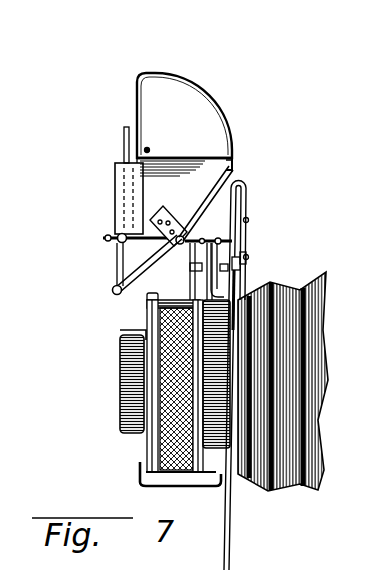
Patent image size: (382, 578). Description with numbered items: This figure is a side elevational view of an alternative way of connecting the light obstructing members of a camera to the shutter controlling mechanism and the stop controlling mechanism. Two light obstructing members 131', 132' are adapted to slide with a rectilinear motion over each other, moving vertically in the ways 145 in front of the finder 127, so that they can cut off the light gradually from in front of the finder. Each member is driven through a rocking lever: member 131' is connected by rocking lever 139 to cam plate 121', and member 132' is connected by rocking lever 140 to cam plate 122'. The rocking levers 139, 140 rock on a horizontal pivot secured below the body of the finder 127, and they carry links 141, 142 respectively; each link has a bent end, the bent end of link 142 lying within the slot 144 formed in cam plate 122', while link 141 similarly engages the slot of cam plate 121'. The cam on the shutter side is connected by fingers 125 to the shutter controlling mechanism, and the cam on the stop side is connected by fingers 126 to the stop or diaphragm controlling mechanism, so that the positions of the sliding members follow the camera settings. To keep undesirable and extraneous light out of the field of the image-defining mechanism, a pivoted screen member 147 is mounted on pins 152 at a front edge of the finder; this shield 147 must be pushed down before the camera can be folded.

The pivoted screen member 147 is at (158, 89).
The pins 152 is at (149, 149).
The finder 127 is at (231, 167).
The ways 145 is at (115, 173).
The light obstructing member 132' is at (95, 143).
The rocking lever 140 is at (104, 238).
The light obstructing member 131' is at (121, 265).
The rocking lever 139 is at (137, 283).
The cam plate 121' is at (188, 270).
The slot 144 is at (200, 217).
The link 142 is at (214, 257).
The link 141 is at (243, 262).
The cam plate 122' is at (282, 380).
The fingers 125 is at (142, 326).
The fingers 126 is at (140, 479).